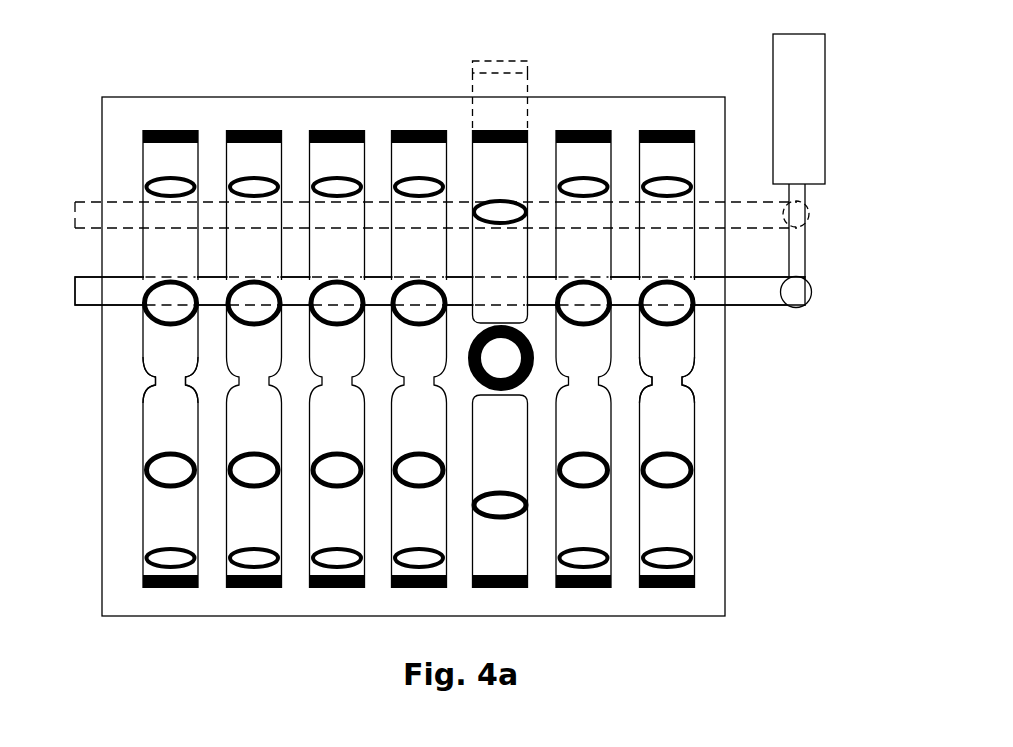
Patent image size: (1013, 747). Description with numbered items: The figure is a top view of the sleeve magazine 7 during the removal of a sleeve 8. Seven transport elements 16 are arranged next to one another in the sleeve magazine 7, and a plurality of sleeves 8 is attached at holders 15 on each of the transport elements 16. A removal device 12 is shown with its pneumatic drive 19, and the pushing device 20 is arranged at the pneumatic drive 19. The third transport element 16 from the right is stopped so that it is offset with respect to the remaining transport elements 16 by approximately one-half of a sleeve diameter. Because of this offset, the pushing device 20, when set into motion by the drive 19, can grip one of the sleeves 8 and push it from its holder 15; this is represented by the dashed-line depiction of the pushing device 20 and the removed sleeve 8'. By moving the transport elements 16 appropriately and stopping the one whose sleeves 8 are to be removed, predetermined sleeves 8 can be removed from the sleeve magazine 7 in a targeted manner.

The sleeve magazine 7 is at (722, 573).
The sleeve 8 is at (409, 301).
The removed sleeve 8' is at (483, 69).
The removal device 12 is at (822, 268).
The holder 15 is at (157, 375).
The transport element 16 is at (166, 597).
The pneumatic drive 19 is at (805, 112).
The pushing device 20 is at (762, 292).